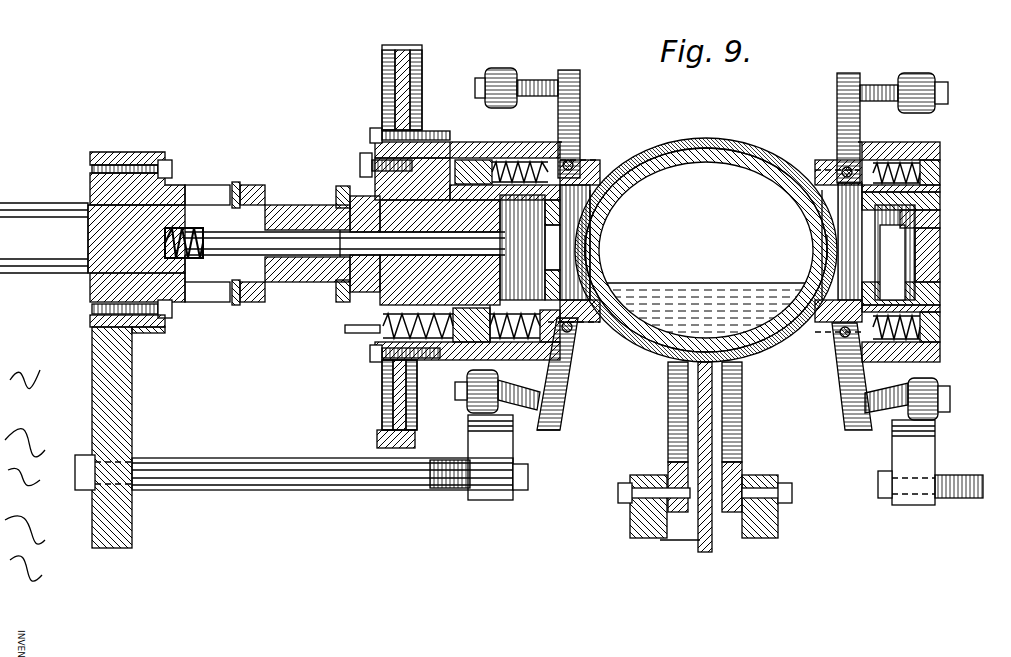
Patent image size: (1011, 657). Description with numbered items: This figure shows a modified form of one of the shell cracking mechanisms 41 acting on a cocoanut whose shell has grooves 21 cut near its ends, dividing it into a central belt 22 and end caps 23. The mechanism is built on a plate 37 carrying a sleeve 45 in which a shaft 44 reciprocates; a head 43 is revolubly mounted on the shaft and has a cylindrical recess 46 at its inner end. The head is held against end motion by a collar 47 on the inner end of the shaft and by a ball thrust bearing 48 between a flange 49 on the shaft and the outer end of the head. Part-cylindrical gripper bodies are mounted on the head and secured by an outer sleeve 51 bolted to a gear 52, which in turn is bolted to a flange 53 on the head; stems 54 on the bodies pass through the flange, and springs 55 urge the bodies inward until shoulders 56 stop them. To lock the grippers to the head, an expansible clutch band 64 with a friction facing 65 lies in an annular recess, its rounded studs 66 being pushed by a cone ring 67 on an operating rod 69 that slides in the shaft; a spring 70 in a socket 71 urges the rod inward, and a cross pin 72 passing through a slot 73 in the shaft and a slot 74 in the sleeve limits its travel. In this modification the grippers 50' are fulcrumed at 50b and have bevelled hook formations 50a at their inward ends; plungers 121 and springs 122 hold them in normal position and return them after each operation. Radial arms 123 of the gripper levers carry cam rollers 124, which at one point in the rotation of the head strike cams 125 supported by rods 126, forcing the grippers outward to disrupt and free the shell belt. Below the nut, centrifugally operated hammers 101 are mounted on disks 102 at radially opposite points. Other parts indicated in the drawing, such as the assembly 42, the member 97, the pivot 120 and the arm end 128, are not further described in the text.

The grooves 21 is at (605, 178).
The central zone (belt) 22 is at (710, 138).
The end pieces or caps 23 is at (590, 245).
The plate 37 is at (122, 420).
The mechanism 41 is at (549, 30).
The support assembly 42 is at (647, 579).
The head 43 is at (372, 192).
The shaft 44 is at (298, 210).
The sleeve 45 is at (165, 192).
The cylindrical recess 46 is at (490, 318).
The collar 47 is at (580, 270).
The ball thrust bearing 48 is at (352, 195).
The flange 49 is at (345, 302).
The bevelled hook formations 50a is at (620, 182).
The fulcrum 50b is at (478, 168).
The outer beveled faces (grippers) 50' is at (711, 241).
The outer sleeve 51 is at (575, 140).
The gear 52 is at (398, 46).
The flange 53 is at (378, 152).
The stems 54 is at (395, 133).
The springs 55 is at (448, 158).
The shoulders 56 is at (452, 140).
The expansible clutch band 64 is at (512, 165).
The facing 65 is at (556, 160).
The rounded studs 66 is at (612, 205).
The cone ring 67 is at (600, 215).
The operating rod 69 is at (318, 250).
The spring 70 is at (178, 295).
The socket 71 is at (186, 290).
The cross pin 72 is at (236, 195).
The slot 73 is at (252, 205).
The slot 74 is at (213, 190).
The plate 97 is at (705, 548).
The centrifugally operated hammers 101 is at (732, 395).
The disks 102 is at (650, 478).
The pivot pin 120 is at (574, 163).
The plungers 121 is at (572, 160).
The springs 122 is at (528, 160).
The radial arms 123 is at (568, 70).
The cam rollers 124 is at (503, 68).
The cams 125 is at (490, 452).
The rods 126 is at (325, 478).
The arm end 128 is at (553, 425).